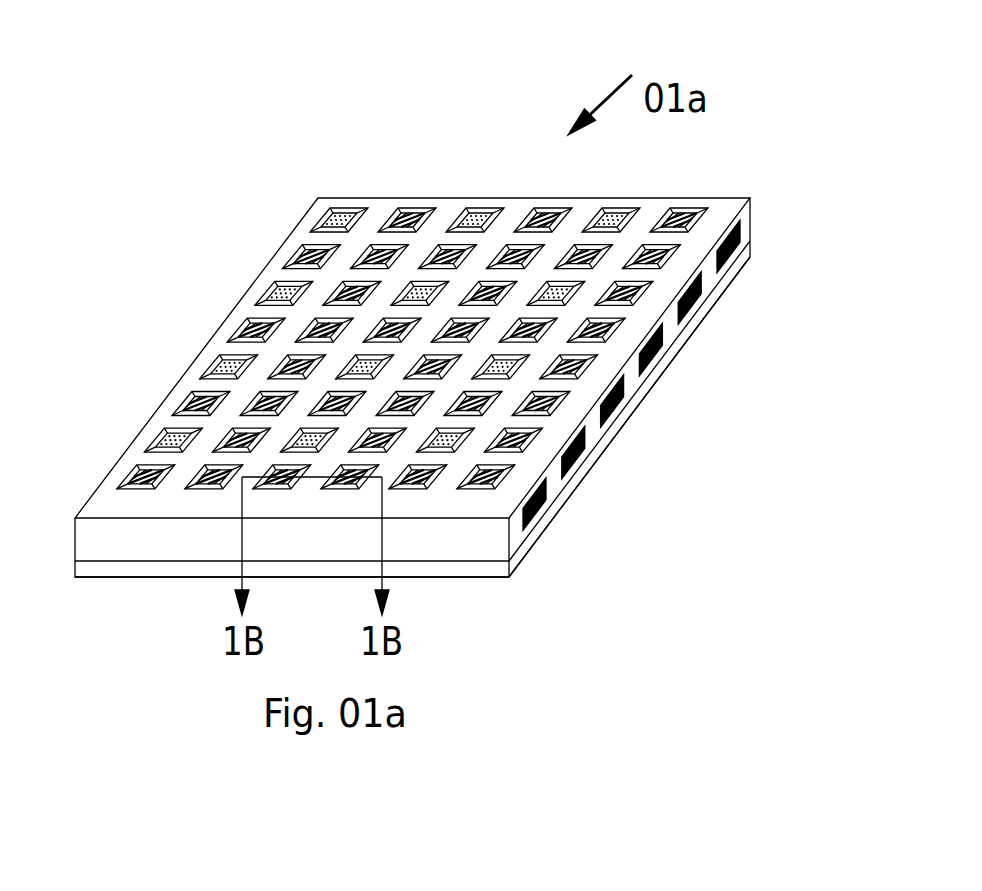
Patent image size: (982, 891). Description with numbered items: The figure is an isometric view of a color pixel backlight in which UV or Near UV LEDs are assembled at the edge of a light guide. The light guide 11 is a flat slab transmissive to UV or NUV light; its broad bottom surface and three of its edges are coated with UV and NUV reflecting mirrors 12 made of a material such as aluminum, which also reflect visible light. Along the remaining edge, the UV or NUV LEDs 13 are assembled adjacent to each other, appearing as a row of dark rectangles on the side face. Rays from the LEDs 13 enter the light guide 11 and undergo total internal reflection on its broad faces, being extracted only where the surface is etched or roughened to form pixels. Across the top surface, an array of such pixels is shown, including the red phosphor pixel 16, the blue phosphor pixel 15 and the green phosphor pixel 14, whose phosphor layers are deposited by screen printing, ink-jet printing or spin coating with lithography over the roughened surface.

The light guide 11 is at (720, 207).
The UV and NUV reflecting mirrors 12 is at (468, 547).
The UV or NUV LEDs 13 is at (588, 445).
The green phosphor pixel 14 is at (412, 217).
The blue phosphor pixel 15 is at (378, 247).
The red phosphor pixel 16 is at (338, 210).